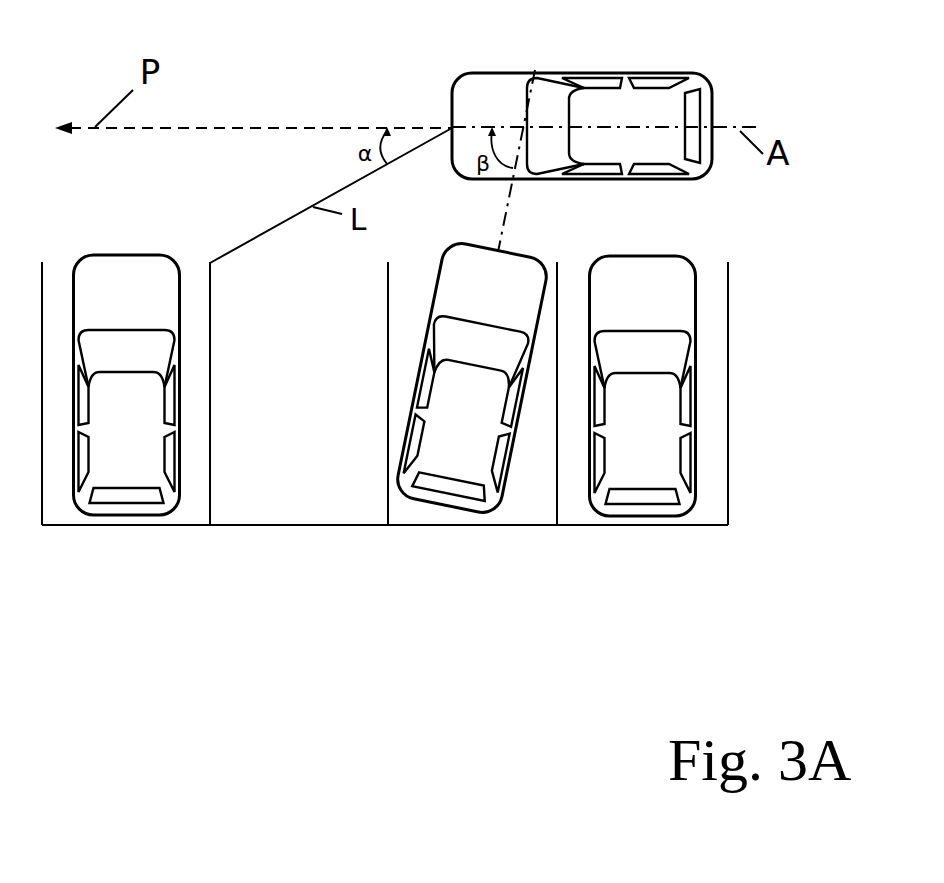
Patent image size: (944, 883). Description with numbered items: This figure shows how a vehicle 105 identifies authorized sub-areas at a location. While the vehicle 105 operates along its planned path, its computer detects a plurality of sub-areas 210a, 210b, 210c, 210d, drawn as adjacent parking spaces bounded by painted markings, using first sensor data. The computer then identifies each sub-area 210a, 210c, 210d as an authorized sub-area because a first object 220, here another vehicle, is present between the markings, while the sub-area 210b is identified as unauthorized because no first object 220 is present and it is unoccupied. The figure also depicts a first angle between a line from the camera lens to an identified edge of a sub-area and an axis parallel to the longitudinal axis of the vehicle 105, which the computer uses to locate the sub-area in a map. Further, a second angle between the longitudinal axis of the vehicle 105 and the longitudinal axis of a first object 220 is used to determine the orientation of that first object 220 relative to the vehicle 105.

The vehicle 105 is at (712, 95).
The first object 220 is at (170, 255).
The sub-area 210a is at (122, 545).
The sub-area 210b is at (300, 545).
The sub-area 210c is at (479, 545).
The sub-area 210d is at (638, 545).